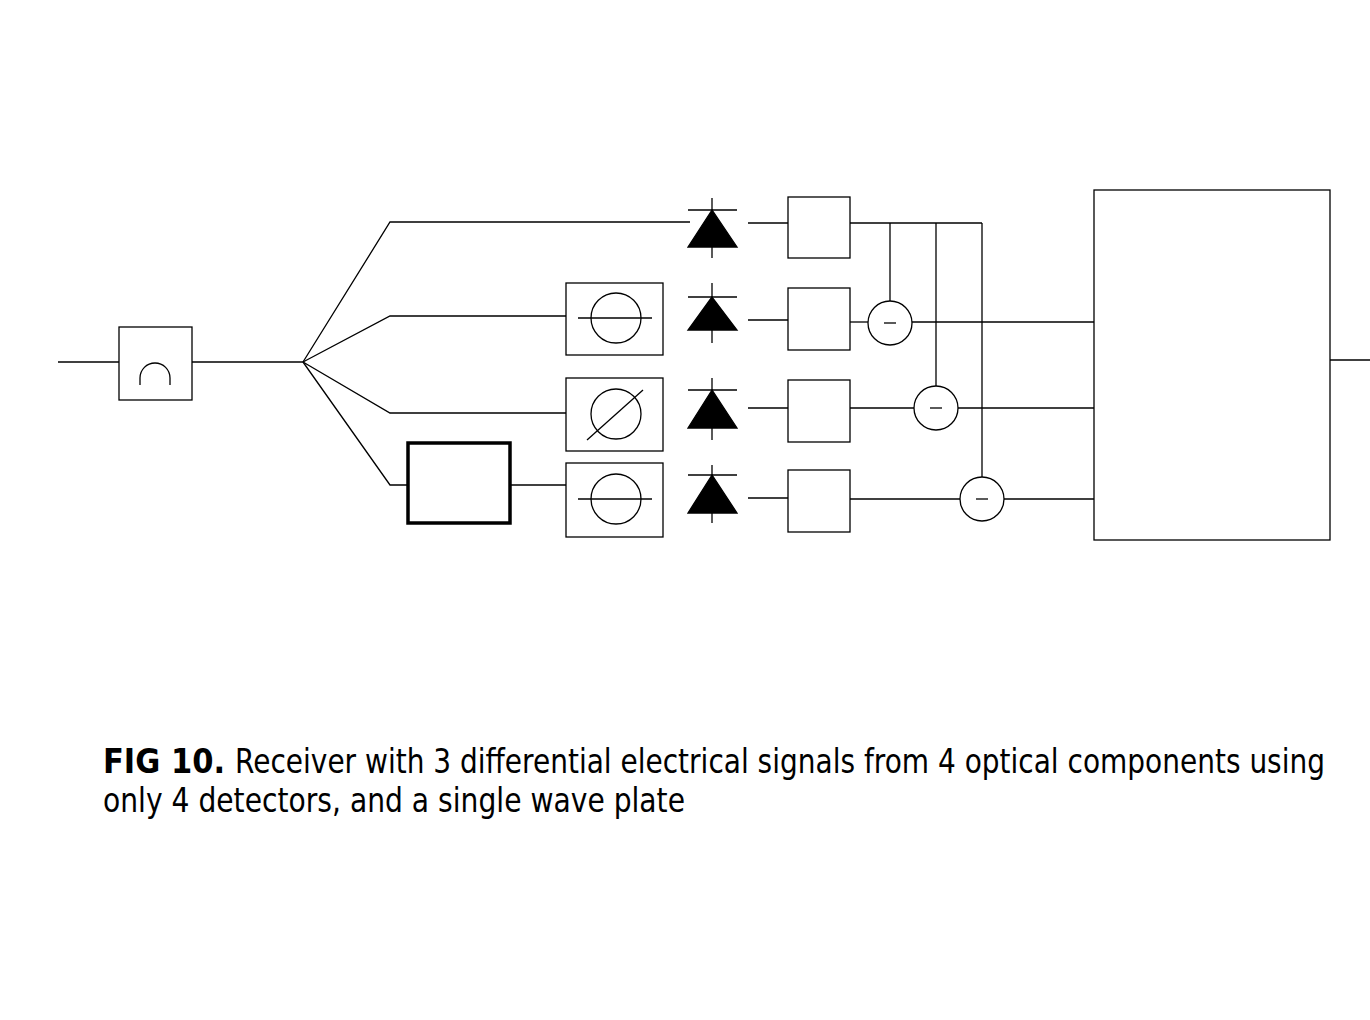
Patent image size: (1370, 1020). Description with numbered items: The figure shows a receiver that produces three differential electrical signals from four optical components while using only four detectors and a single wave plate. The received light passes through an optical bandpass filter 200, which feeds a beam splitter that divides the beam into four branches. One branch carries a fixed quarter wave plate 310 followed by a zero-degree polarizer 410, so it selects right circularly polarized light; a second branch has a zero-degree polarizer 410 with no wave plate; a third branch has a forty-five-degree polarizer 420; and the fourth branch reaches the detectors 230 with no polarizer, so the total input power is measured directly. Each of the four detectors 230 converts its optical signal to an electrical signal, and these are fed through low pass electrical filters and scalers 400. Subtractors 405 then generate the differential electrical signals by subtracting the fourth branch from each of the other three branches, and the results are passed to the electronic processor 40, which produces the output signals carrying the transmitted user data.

The optical bandpass filter 200 is at (129, 290).
The 0° polarizer 410 is at (613, 608).
The 45° polarizer 420 is at (552, 389).
The fixed quarter wave plate 310 is at (443, 537).
The detectors 230 is at (703, 190).
The low pass electrical filters and scalers 400 is at (830, 170).
The subtractors 405 is at (940, 542).
The electronic processor 40 is at (1232, 365).